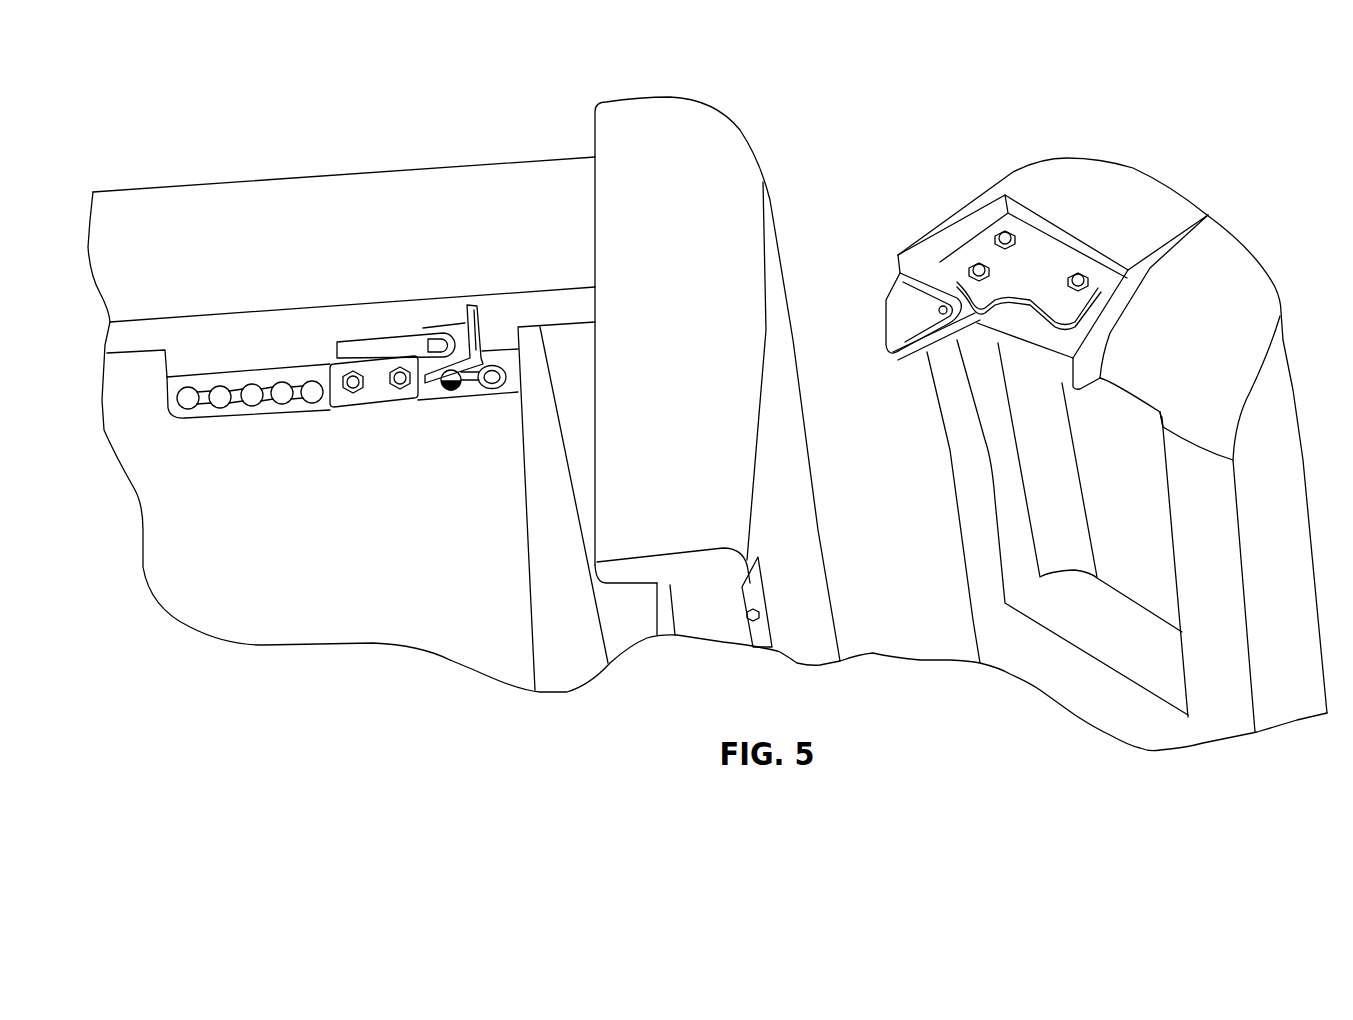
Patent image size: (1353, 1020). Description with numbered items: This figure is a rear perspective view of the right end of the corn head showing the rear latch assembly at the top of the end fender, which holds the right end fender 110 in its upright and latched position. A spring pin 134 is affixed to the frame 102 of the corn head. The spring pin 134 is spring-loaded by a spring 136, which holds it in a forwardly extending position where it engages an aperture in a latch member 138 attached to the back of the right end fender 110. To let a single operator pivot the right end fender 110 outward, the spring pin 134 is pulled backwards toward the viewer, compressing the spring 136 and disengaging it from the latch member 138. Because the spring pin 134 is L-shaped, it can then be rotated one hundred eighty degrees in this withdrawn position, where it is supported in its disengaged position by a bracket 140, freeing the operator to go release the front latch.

The frame 102 is at (298, 512).
The right end fender 110 is at (1012, 177).
The spring pin 134 is at (373, 345).
The spring 136 is at (452, 392).
The latch member 138 is at (927, 310).
The bracket 140 is at (467, 308).